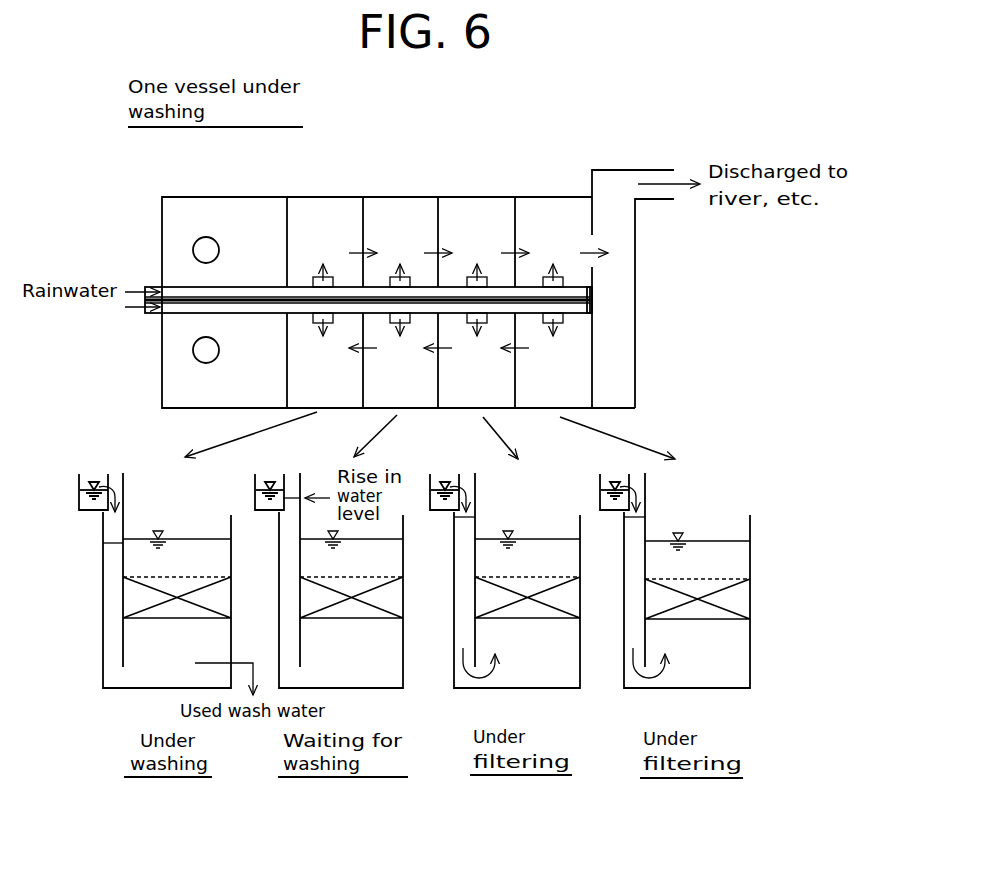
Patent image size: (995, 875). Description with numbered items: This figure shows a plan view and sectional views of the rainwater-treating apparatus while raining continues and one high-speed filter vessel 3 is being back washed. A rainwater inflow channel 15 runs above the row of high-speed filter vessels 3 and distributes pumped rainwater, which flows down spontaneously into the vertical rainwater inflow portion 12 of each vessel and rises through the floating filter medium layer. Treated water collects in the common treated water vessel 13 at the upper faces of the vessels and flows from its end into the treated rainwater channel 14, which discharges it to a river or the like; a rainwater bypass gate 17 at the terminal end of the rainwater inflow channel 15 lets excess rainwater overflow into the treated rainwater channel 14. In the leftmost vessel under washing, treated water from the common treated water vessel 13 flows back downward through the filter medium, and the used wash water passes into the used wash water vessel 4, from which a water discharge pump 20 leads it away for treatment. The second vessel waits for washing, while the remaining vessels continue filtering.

The high-speed filter vessel 3 is at (397, 218).
The used wash water vessel 4 is at (215, 217).
The rainwater inflow portion 12 is at (110, 595).
The common treated water vessel 13 is at (197, 550).
The treated rainwater channel 14 is at (620, 298).
The rainwater inflow channel 15 is at (258, 293).
The rainwater bypass gate 17 is at (593, 312).
The water discharge pump 20 is at (193, 246).